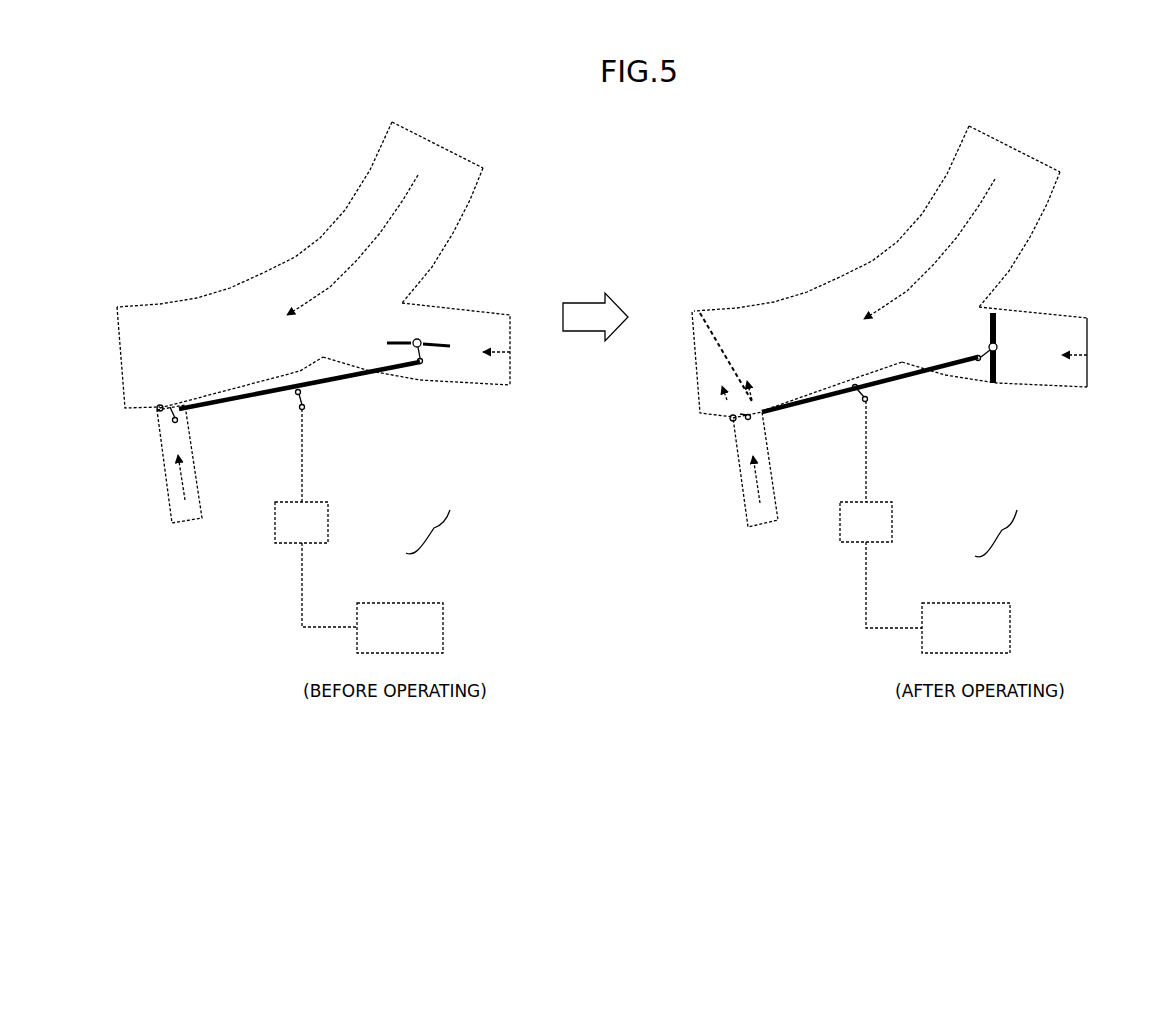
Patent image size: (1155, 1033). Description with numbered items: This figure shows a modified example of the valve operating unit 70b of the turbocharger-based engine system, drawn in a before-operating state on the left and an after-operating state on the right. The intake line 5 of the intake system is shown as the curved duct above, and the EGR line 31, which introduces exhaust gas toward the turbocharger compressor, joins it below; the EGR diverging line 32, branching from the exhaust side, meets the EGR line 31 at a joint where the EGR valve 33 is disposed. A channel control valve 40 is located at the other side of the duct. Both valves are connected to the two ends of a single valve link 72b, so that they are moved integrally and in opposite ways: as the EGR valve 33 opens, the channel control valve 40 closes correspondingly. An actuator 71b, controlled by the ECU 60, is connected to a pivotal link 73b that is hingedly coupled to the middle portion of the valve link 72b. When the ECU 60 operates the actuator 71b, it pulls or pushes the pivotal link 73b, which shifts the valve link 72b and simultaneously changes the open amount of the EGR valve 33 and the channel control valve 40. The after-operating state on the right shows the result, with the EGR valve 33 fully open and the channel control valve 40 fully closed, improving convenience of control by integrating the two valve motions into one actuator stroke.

The intake line 5 is at (448, 177).
The EGR line 31 is at (210, 322).
The EGR diverging line 32 is at (170, 482).
The EGR valve 33 is at (157, 406).
The channel control valve 40 is at (421, 339).
The ECU 60 is at (443, 628).
The valve operating unit 70b is at (725, 537).
The actuator 71b is at (313, 522).
The valve link 72b is at (353, 380).
The pivotal link 73b is at (296, 396).